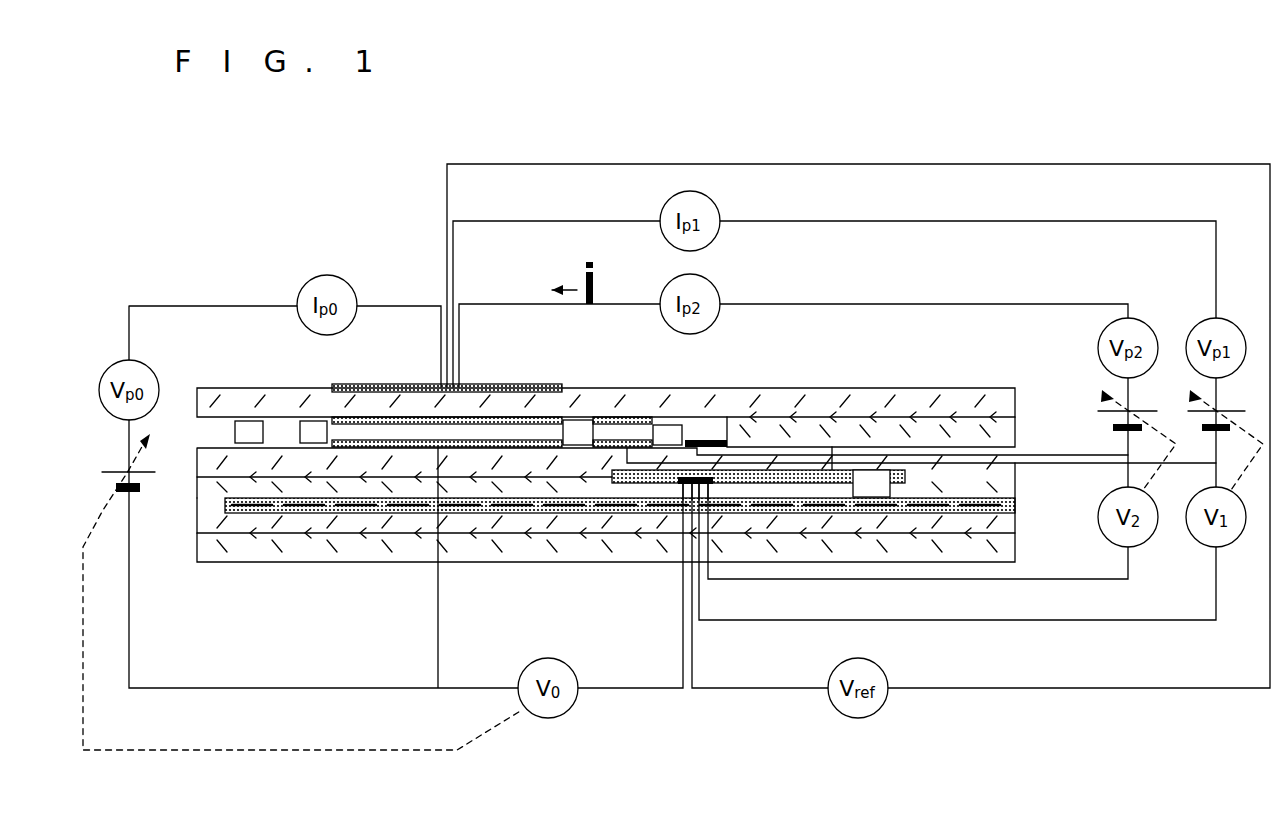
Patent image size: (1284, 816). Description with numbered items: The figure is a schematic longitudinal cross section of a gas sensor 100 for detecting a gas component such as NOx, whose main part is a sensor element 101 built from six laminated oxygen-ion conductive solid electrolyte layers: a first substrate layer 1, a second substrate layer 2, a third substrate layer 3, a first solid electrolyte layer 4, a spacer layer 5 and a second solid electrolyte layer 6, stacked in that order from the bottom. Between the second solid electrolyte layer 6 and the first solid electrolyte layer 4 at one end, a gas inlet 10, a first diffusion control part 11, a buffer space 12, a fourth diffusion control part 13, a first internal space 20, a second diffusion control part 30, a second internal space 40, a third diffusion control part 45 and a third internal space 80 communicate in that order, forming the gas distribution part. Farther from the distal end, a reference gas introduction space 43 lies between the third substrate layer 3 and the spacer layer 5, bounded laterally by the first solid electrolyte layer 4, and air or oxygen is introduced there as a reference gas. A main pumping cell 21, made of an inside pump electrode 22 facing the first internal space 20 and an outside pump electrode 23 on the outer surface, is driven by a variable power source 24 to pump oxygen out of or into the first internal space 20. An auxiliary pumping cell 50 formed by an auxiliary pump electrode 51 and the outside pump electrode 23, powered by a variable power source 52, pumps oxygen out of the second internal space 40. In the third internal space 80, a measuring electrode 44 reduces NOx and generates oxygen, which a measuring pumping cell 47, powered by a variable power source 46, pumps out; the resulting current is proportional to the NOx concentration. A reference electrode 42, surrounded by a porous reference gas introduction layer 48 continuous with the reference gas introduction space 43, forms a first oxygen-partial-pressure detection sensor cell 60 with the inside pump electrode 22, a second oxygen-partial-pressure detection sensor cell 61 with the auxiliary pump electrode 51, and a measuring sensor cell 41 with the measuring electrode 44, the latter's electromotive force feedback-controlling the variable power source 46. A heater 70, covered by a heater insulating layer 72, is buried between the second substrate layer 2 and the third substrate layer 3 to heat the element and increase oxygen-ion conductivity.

The gas sensor 100 is at (152, 220).
The first substrate layer 1 is at (212, 550).
The second substrate layer 2 is at (212, 523).
The third substrate layer 3 is at (212, 493).
The first solid electrolyte layer 4 is at (212, 462).
The spacer layer 5 is at (1010, 440).
The second solid electrolyte layer 6 is at (1007, 401).
The gas inlet 10 is at (212, 428).
The first diffusion control part 11 is at (250, 427).
The buffer space 12 is at (280, 427).
The fourth diffusion control part 13 is at (316, 427).
The first internal space 20 is at (357, 430).
The main pumping cell 21 is at (560, 399).
The inside pump electrode 22 is at (397, 440).
The outside pump electrode 23 is at (490, 384).
The variable power source 24 is at (108, 480).
The second diffusion control part 30 is at (576, 427).
The second internal space 40 is at (666, 430).
The measuring sensor cell 41 is at (676, 458).
The reference electrode 42 is at (678, 485).
The reference gas introduction space 43 is at (1007, 470).
The measuring electrode 44 is at (714, 442).
The third diffusion control part 45 is at (692, 440).
The variable power source 46 is at (1139, 410).
The measuring pumping cell 47 is at (744, 400).
The reference gas introduction layer 48 is at (797, 484).
The auxiliary pumping cell 50 is at (605, 399).
The auxiliary pump electrode 51 is at (645, 432).
The variable power source 52 is at (1226, 410).
The first oxygen-partial-pressure detection sensor cell 60 is at (561, 466).
The second oxygen-partial-pressure detection sensor cell 61 is at (598, 466).
The heater 70 is at (266, 514).
The heater insulating layer 72 is at (234, 514).
The third internal space 80 is at (728, 430).
The sensor element 101 is at (792, 386).